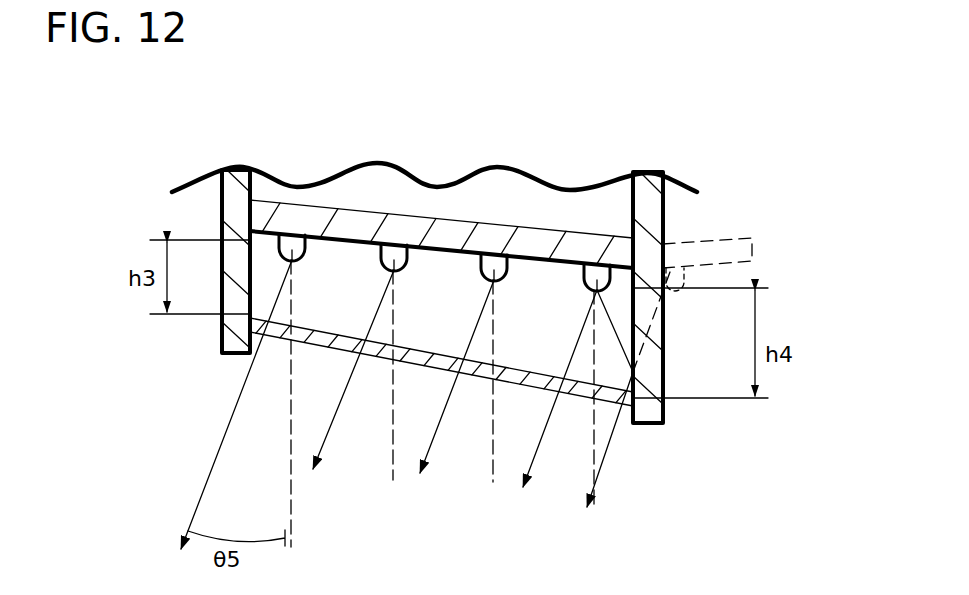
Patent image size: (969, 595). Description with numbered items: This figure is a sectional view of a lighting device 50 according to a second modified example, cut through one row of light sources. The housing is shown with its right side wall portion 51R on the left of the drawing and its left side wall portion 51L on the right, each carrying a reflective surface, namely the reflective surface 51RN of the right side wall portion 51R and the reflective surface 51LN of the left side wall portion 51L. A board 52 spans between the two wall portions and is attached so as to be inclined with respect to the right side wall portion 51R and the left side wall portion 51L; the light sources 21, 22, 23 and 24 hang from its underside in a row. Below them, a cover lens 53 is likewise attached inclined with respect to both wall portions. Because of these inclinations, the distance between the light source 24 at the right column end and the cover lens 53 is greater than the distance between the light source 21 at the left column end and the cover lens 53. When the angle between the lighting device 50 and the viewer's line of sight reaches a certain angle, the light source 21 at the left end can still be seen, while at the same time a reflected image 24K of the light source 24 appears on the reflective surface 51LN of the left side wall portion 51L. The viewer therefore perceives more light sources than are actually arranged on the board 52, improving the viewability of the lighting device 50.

The lighting device 50 is at (353, 118).
The right side wall portion 51R is at (228, 217).
The left side wall portion 51L is at (652, 210).
The board 52 is at (462, 222).
The cover lens 53 is at (423, 372).
The light source 21 is at (306, 250).
The light source 22 is at (410, 262).
The light source 23 is at (480, 279).
The light source 24 is at (583, 281).
The reflected image 24K is at (684, 290).
The reflective surface of the right side wall portion 51RN is at (253, 293).
The reflective surface of the left side wall portion 51LN is at (630, 338).